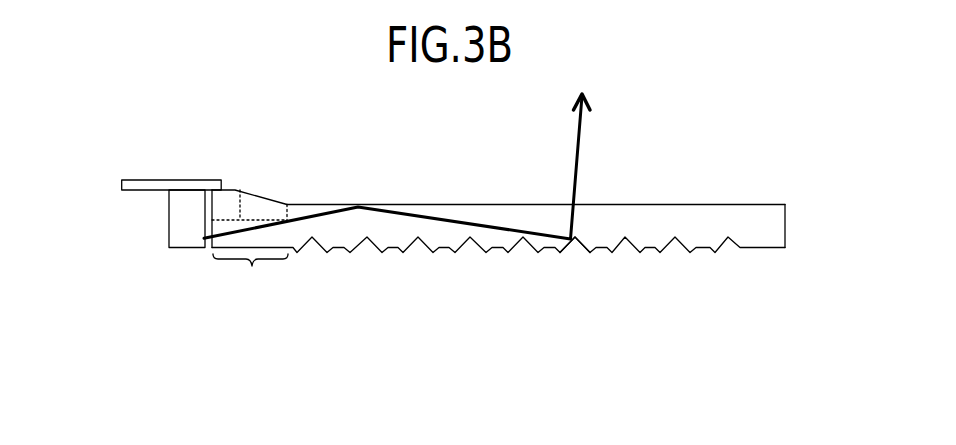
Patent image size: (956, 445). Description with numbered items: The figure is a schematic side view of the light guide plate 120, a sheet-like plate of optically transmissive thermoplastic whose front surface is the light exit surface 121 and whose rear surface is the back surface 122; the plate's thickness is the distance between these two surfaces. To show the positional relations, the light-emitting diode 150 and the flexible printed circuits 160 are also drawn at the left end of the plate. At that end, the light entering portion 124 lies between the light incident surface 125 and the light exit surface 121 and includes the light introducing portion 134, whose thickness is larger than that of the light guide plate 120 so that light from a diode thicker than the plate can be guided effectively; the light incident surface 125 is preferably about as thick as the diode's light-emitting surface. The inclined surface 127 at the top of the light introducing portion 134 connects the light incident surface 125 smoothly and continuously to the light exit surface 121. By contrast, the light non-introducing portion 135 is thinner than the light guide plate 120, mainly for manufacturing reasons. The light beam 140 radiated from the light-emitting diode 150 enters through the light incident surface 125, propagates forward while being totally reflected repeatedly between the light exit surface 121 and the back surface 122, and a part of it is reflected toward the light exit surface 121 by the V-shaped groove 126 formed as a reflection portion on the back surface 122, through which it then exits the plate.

The light guide plate 120 is at (435, 223).
The light exit surface 121 is at (656, 204).
The back surface 122 is at (650, 249).
The light entering portion 124 is at (250, 279).
The light incident surface 125 is at (212, 220).
The V-shaped groove 126 is at (579, 253).
The inclined surface 127 is at (259, 207).
The light introducing portion 134 is at (262, 198).
The light non-introducing portion 135 is at (240, 192).
The light beam 140 is at (382, 213).
The light-emitting diode 150 is at (183, 235).
The flexible printed circuits 160 is at (178, 179).